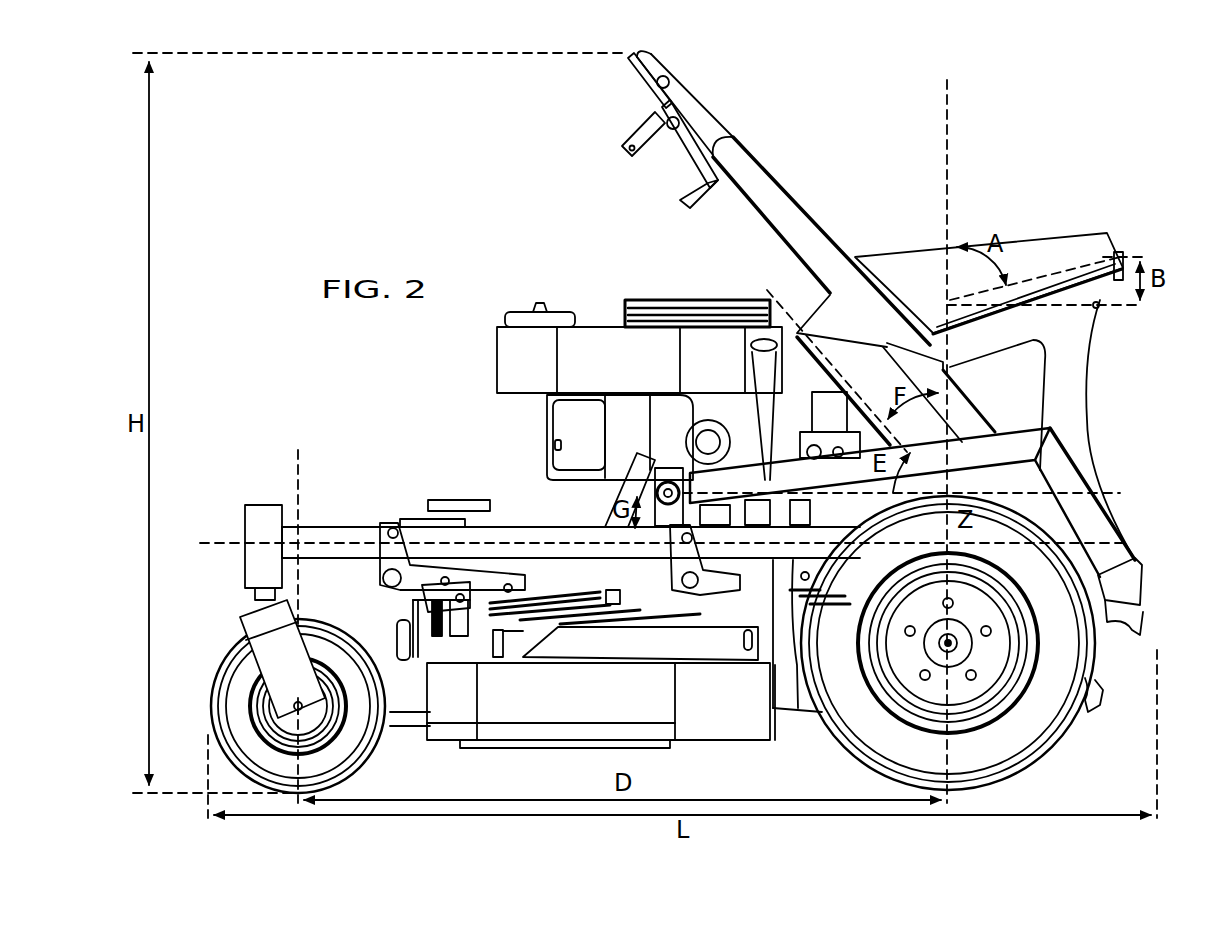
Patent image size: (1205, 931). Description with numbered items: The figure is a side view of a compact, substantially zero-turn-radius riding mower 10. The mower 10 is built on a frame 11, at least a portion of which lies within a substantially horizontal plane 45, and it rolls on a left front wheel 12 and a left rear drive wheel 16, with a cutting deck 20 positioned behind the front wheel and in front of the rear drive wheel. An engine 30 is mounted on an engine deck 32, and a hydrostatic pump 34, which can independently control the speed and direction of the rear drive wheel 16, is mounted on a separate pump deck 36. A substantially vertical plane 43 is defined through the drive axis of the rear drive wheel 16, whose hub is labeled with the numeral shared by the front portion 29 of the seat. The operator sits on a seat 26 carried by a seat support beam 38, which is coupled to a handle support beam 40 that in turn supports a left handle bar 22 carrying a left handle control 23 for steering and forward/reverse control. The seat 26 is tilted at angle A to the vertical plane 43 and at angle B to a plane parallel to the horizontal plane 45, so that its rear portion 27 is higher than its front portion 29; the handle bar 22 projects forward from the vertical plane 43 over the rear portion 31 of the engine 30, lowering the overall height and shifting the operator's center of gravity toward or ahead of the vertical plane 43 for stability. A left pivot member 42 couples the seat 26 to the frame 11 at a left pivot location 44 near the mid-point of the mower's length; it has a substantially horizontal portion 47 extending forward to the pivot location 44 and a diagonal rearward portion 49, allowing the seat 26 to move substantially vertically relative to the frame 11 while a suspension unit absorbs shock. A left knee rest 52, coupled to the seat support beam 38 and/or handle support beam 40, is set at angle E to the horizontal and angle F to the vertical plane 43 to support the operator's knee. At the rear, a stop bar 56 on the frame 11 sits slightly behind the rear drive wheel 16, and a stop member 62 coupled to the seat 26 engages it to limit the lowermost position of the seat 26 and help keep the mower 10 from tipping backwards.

The mower 10 is at (442, 183).
The frame 11 is at (309, 535).
The left front wheel 12 is at (234, 680).
The left rear drive wheel 16 is at (902, 755).
The cutting deck 20 is at (544, 725).
The left handle bar 22 is at (691, 97).
The left handle control 23 is at (630, 74).
The seat 26 is at (1037, 262).
The rear portion of the seat 27 is at (1093, 235).
The front portion of the seat 29 is at (935, 286).
The engine 30 is at (504, 372).
The rear portion of the engine 31 is at (722, 350).
The engine deck 32 is at (604, 526).
The hydrostatic pump 34 is at (822, 416).
The pump deck 36 is at (793, 536).
The seat support beam 38 is at (1080, 358).
The handle support beam 40 is at (760, 173).
The left pivot member 42 is at (1055, 468).
The vertical plane 43 is at (948, 132).
The left pivot location 44 is at (666, 488).
The horizontal plane 45 is at (232, 540).
The substantially horizontal portion 47 is at (977, 447).
The diagonal rearward portion 49 is at (1092, 526).
The left knee rest 52 is at (845, 340).
The stop bar 56 is at (1100, 702).
The stop member 62 is at (1148, 640).